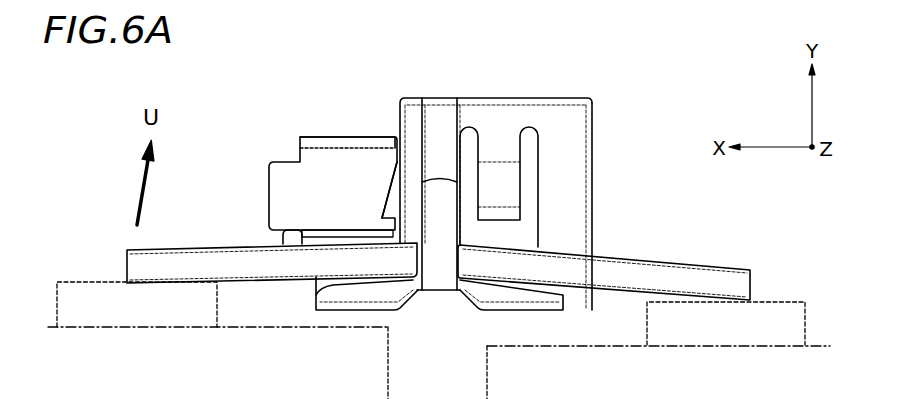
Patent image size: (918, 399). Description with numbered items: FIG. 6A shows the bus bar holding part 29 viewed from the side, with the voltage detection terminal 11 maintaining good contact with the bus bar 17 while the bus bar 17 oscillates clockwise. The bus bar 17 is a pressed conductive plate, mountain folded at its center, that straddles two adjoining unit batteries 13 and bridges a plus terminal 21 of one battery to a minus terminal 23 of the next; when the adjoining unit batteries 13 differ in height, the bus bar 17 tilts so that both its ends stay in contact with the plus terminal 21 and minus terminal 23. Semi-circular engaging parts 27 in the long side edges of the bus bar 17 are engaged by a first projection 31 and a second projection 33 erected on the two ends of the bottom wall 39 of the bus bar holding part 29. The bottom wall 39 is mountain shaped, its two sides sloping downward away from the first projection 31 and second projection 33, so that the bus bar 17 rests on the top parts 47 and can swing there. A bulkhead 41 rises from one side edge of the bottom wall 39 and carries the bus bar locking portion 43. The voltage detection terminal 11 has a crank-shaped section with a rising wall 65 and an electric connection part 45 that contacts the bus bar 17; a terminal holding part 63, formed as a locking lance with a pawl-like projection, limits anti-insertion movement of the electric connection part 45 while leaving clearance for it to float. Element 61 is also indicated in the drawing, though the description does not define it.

The voltage detection terminal 11 is at (306, 219).
The unit battery 13 is at (250, 327).
The bus bar 17 is at (660, 246).
The plus terminal 21 is at (763, 300).
The minus terminal 23 is at (98, 280).
The engaging part 27 is at (423, 257).
The bus bar holding part 29 is at (527, 174).
The first projection 31 is at (418, 205).
The second projection 33 is at (458, 120).
The bottom wall 39 is at (363, 303).
The bulkhead 41 is at (593, 110).
The bus bar locking portion 43 is at (510, 182).
The electric connection part 45 is at (330, 231).
The top part 47 is at (465, 272).
The mating housing 61 is at (268, 185).
The terminal holding part 63 is at (385, 197).
The rising wall 65 is at (320, 155).